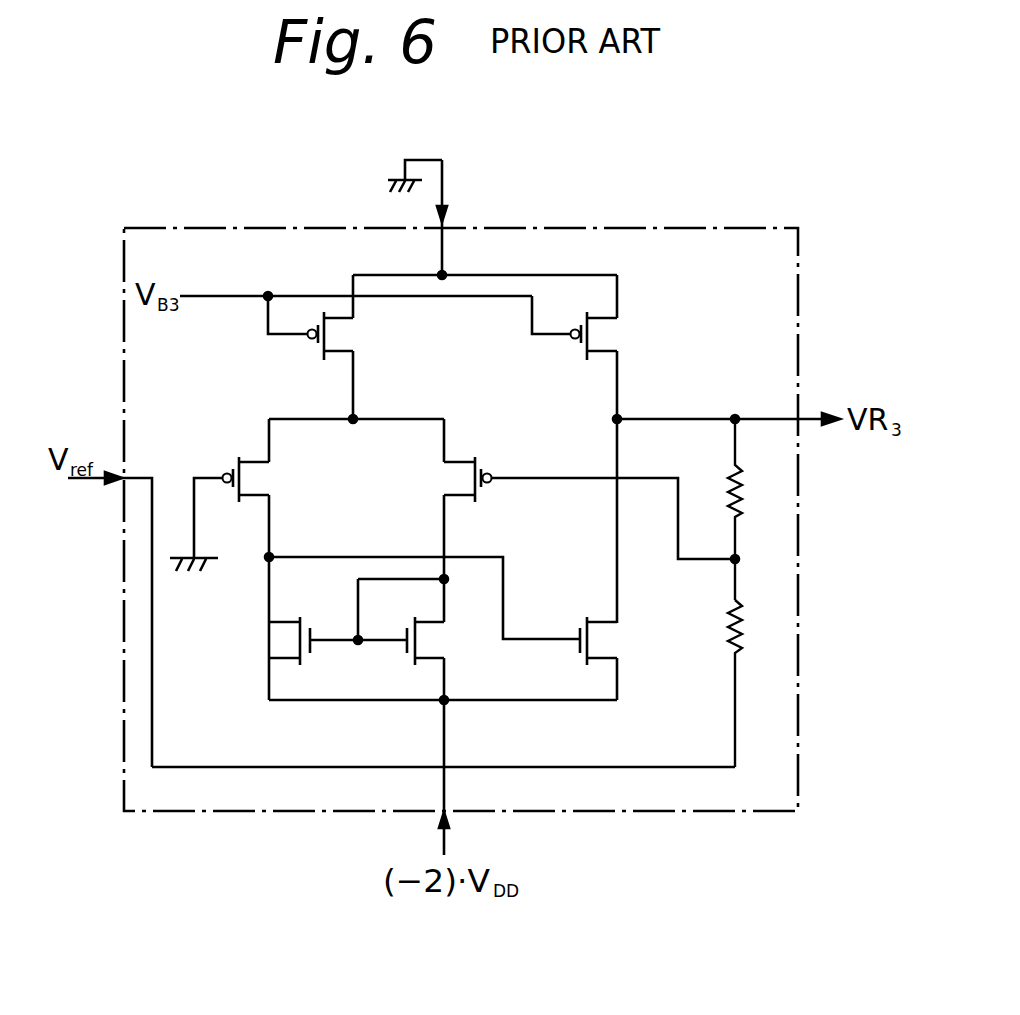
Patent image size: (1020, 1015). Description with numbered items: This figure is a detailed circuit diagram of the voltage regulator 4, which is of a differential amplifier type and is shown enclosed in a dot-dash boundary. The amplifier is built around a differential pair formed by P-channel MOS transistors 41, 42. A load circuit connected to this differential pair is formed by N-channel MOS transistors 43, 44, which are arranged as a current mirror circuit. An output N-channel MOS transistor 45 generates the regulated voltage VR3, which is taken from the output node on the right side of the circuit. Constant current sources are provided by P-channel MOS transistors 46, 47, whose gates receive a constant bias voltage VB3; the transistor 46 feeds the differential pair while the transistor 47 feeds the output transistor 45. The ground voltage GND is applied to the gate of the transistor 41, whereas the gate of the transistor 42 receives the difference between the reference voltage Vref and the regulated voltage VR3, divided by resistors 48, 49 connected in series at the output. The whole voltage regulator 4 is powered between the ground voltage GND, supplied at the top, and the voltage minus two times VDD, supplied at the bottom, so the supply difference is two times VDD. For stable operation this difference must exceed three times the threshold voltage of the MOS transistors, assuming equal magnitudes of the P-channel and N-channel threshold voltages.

The voltage regulator 4 is at (665, 228).
The P-channel MOS transistor 41 is at (269, 440).
The P-channel MOS transistor 42 is at (447, 478).
The N-channel MOS transistor 43 is at (278, 640).
The N-channel MOS transistor 44 is at (437, 640).
The output N-channel MOS transistor 45 is at (620, 640).
The P-channel MOS transistor 46 is at (312, 343).
The P-channel MOS transistor 47 is at (575, 343).
The resistor 48 is at (745, 487).
The resistor 49 is at (745, 637).